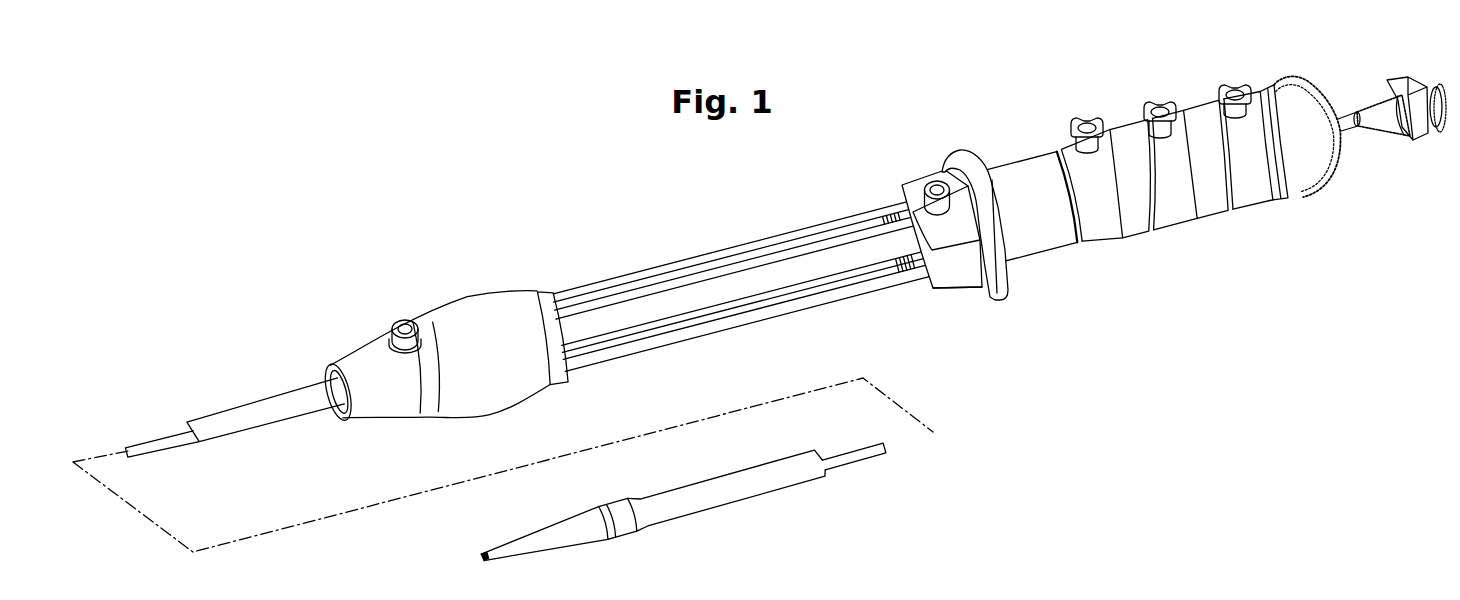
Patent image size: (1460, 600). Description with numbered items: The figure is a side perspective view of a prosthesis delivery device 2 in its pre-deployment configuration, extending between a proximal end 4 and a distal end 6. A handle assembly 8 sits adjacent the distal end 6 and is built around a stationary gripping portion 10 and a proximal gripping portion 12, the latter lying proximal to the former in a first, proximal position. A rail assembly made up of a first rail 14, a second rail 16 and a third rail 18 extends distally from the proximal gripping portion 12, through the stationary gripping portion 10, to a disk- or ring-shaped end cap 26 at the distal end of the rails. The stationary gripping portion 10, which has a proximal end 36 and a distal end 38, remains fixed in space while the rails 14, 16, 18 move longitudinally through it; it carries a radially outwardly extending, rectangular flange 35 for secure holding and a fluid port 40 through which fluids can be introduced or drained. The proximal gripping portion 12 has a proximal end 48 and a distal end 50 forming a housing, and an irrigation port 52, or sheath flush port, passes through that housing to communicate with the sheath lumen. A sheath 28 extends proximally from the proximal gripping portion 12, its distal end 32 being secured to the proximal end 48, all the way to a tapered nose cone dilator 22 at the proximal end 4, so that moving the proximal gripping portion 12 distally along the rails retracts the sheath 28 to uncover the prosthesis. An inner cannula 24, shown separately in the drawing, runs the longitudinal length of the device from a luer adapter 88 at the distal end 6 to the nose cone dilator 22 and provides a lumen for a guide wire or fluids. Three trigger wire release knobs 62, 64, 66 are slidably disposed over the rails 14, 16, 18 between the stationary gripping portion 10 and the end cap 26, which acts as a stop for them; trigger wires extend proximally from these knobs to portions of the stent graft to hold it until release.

The delivery device 2 is at (536, 213).
The proximal end 4 is at (550, 524).
The distal end 6 is at (1412, 78).
The handle assembly 8 is at (1088, 238).
The stationary gripping portion 10 is at (1008, 296).
The proximal gripping portion 12 is at (472, 297).
The first rail 14 is at (655, 270).
The second rail 16 is at (797, 262).
The third rail 18 is at (702, 331).
The nose cone dilator 22 is at (580, 545).
The inner cannula 24 is at (868, 466).
The end cap 26 is at (1318, 190).
The sheath 28 is at (246, 406).
The distal end of the sheath 32 is at (330, 412).
The flange 35 is at (956, 148).
The proximal end of the stationary gripping portion 36 is at (937, 287).
The distal end of the stationary gripping portion 38 is at (1033, 156).
The fluid port 40 is at (934, 188).
The proximal end of the proximal gripping portion 48 is at (352, 426).
The distal end of the proximal gripping portion 50 is at (563, 385).
The irrigation port 52 is at (398, 325).
The trigger wire release knob 62 is at (1262, 90).
The trigger wire release knob 64 is at (1195, 110).
The trigger wire release knob 66 is at (1115, 127).
The luer adapter 88 is at (1378, 98).